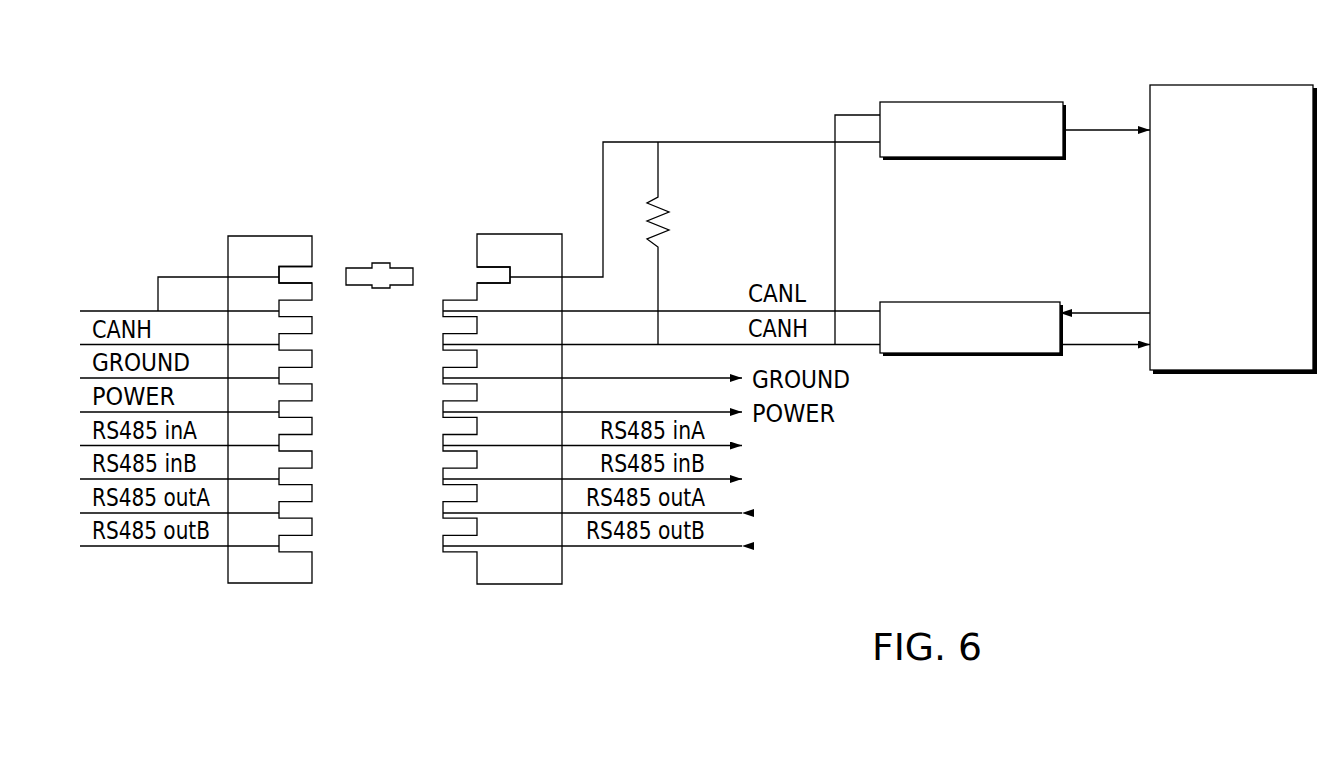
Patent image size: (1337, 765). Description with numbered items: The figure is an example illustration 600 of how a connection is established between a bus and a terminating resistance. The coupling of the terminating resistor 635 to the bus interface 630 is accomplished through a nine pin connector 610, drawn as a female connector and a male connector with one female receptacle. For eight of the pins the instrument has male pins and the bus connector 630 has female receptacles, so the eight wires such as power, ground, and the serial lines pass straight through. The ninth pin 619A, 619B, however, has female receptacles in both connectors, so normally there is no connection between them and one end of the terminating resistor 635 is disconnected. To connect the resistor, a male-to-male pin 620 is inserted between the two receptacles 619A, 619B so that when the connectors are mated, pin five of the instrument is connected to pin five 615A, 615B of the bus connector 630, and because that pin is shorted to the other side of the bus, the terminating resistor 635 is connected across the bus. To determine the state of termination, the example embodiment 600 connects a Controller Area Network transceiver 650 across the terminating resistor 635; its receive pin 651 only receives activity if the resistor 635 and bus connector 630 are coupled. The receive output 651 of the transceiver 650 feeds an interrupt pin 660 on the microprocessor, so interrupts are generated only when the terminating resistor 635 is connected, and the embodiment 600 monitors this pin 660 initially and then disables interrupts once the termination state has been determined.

The example illustration 600 is at (899, 74).
The nine pin connector 610 is at (320, 572).
The pin 5 615A is at (445, 416).
The pin 5 615B is at (308, 412).
The ninth pin 619A is at (478, 275).
The ninth pin 619B is at (310, 275).
The male-to-male pin 620 is at (378, 262).
The bus interface 630 is at (243, 231).
The terminating resistor 635 is at (668, 220).
The CAN transceiver 650 is at (972, 357).
The receive pin 651 is at (1195, 372).
The interrupt pin 660 is at (1220, 142).